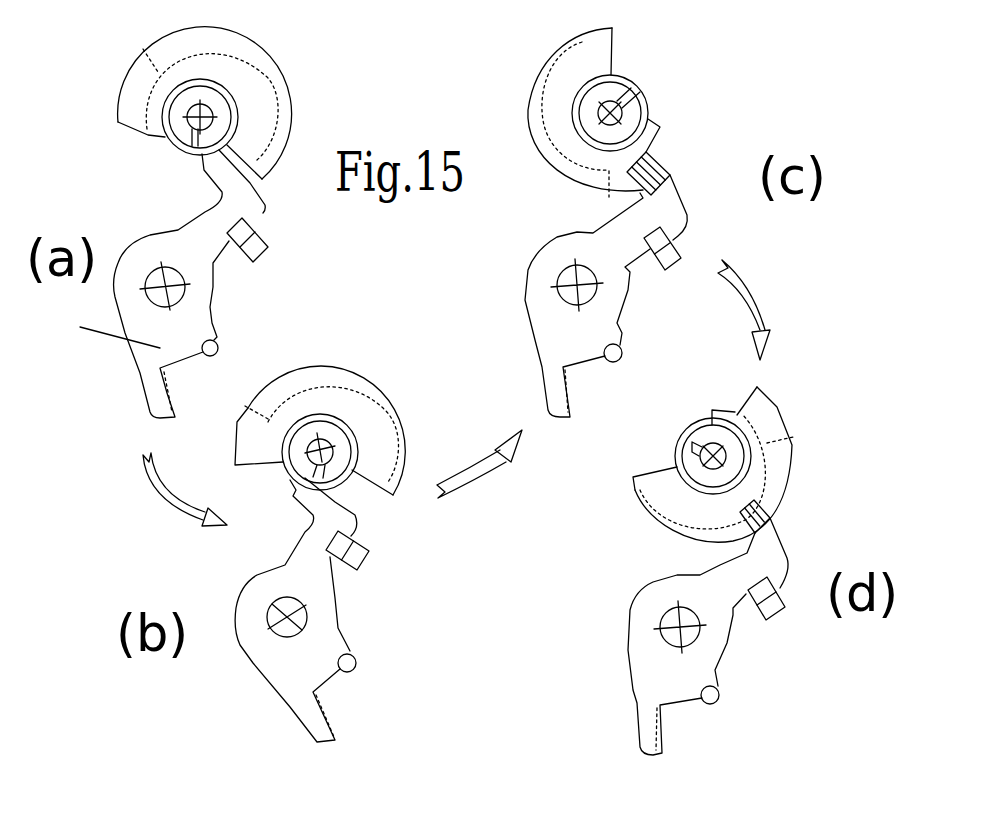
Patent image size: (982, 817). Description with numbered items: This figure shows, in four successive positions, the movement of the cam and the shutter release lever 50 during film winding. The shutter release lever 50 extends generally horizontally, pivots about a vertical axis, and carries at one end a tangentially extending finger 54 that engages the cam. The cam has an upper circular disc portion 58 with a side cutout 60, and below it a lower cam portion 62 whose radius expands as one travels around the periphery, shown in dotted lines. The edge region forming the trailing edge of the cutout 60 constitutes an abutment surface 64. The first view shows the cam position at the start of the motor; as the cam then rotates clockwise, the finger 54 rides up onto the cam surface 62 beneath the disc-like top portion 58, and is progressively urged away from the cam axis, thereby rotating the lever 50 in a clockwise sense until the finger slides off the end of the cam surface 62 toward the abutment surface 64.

The shutter release lever 50 is at (207, 292).
The finger 54 is at (293, 492).
The upper circular disc portion 58 is at (140, 113).
The side cutout 60 is at (168, 158).
The lower cam portion 62 is at (253, 72).
The abutment surface 64 is at (663, 476).